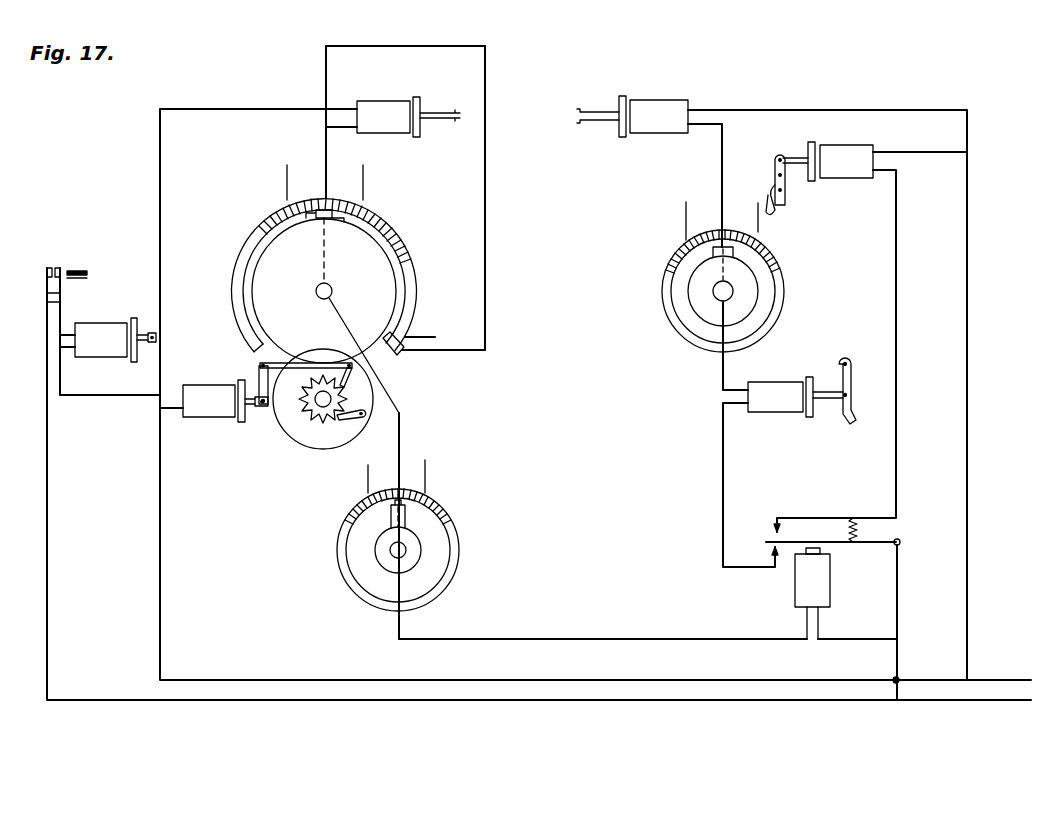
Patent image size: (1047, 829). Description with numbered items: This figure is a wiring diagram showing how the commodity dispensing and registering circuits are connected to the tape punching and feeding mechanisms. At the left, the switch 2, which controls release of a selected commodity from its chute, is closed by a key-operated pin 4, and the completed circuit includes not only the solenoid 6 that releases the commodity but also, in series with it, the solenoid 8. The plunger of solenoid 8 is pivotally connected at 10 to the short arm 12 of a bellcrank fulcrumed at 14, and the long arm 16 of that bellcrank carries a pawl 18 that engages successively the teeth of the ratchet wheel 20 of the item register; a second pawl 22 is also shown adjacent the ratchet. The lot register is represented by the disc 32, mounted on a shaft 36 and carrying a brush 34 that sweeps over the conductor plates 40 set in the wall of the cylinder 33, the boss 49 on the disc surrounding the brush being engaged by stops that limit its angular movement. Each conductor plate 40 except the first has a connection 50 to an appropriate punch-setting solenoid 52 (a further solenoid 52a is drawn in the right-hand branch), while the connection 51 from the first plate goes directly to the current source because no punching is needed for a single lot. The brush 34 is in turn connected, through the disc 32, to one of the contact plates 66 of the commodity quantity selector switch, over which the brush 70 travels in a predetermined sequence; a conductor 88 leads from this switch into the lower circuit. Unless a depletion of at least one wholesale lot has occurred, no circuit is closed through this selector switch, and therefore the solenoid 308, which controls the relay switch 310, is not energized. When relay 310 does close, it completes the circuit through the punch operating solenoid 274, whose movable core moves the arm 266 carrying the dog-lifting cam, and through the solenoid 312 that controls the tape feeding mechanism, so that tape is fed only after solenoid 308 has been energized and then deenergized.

The switch 2 is at (47, 268).
The key-operated pin 4 is at (78, 270).
The solenoid 6 is at (91, 333).
The solenoid 8 is at (208, 404).
The pivotal connection 10 is at (262, 404).
The short arm 12 is at (262, 385).
The fulcrum 14 is at (258, 365).
The long arm 16 is at (297, 368).
The pawl 18 is at (352, 376).
The ratchet wheel 20 is at (312, 420).
The pawl 22 is at (350, 422).
The disc 32 is at (391, 263).
The cylinder 33 is at (418, 285).
The brush 34 is at (311, 217).
The shaft 36 is at (333, 292).
The conductor plates 40 is at (392, 224).
The boss 49 is at (341, 222).
The connection 50 is at (323, 147).
The connection 51 is at (487, 230).
The solenoid 52 is at (377, 117).
The solenoid 52a is at (637, 115).
The contact plates 66 is at (438, 505).
The brush 70 is at (440, 515).
The conductor 88 is at (400, 438).
The arm 266 is at (840, 412).
The solenoid 274 is at (787, 390).
The solenoid 308 is at (808, 582).
The relay switch 310 is at (775, 530).
The solenoid 312 is at (842, 163).